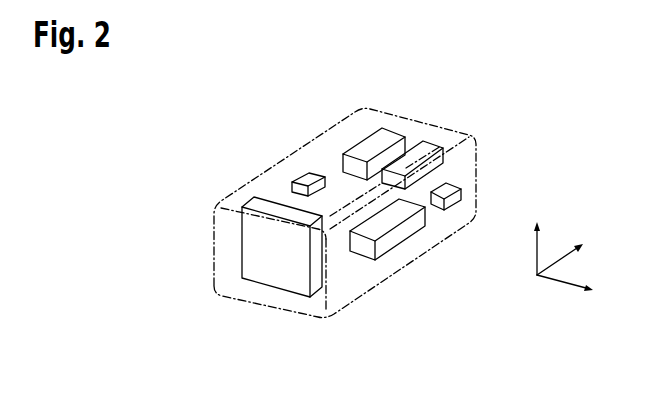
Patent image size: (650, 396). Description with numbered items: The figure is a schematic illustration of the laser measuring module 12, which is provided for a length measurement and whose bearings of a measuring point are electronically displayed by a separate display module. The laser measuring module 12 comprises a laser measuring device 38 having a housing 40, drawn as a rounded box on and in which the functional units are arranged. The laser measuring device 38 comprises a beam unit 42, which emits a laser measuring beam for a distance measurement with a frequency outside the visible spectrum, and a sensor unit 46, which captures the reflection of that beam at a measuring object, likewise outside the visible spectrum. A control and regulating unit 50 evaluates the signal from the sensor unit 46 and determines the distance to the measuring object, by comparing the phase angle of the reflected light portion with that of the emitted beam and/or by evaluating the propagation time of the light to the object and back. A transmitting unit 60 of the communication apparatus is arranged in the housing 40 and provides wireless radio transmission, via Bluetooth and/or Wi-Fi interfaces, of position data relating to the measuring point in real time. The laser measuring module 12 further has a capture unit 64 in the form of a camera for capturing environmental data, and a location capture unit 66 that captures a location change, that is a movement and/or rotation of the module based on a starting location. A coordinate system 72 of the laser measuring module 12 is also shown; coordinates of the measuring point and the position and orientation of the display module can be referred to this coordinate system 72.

The laser measuring module 12 is at (231, 106).
The laser measuring device 38 is at (227, 248).
The housing 40 is at (310, 143).
The beam unit 42 is at (370, 149).
The sensor unit 46 is at (462, 198).
The control and regulating unit 50 is at (250, 270).
The transmitting unit 60 is at (300, 173).
The capture unit 64 is at (442, 152).
The location capture unit 66 is at (407, 232).
The coordinate system 72 is at (546, 281).